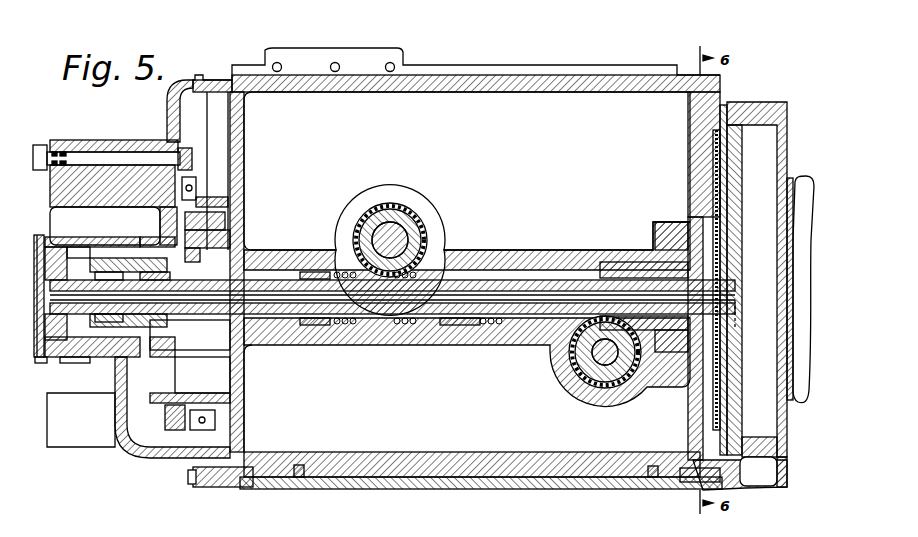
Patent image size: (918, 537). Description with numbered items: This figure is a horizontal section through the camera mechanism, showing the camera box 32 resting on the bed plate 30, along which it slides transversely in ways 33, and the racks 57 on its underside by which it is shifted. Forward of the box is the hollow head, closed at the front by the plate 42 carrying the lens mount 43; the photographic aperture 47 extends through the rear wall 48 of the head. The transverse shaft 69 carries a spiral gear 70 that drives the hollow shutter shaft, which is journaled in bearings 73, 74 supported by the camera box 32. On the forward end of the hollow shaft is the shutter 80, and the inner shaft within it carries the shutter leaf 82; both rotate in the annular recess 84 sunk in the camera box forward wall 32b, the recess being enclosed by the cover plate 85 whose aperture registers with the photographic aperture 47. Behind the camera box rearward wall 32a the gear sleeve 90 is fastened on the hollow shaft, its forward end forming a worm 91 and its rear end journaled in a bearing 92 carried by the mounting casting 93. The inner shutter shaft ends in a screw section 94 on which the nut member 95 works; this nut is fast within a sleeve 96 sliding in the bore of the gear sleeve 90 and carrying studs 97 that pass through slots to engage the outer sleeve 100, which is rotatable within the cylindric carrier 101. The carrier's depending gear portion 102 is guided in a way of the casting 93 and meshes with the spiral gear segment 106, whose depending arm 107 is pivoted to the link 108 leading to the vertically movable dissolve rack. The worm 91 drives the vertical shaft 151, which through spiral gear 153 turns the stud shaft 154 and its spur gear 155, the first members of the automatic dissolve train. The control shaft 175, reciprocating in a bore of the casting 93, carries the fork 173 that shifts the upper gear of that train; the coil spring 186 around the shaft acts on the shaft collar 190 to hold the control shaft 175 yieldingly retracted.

The bed plate 30 is at (434, 491).
The camera box 32 is at (542, 76).
The camera box rearward wall 32a is at (243, 144).
The camera box forward wall 32b is at (690, 156).
The ways 33 is at (250, 488).
The plate 42 is at (792, 130).
The lens mount 43 is at (803, 185).
The photographic aperture 47 is at (738, 318).
The rear wall 48 is at (735, 177).
The racks 57 is at (298, 465).
The transverse shaft 69 is at (593, 360).
The spiral gear 70 is at (567, 388).
The bearing 73 is at (250, 263).
The bearing 74 is at (290, 263).
The shutter 80 is at (703, 167).
The shutter leaf 82 is at (713, 198).
The annular recess 84 is at (713, 147).
The cover plate 85 is at (730, 106).
The gear sleeve 90 is at (178, 268).
The worm 91 is at (195, 318).
The bearing 92 is at (44, 240).
The mounting casting 93 is at (83, 190).
The screw section 94 is at (78, 275).
The nut member 95 is at (40, 357).
The sleeve 96 is at (70, 357).
The studs 97 is at (117, 280).
The sleeve 100 is at (165, 272).
The cylindric carrier 101 is at (78, 279).
The gear portion 102 is at (100, 345).
The spiral gear segment 106 is at (115, 382).
The depending arm 107 is at (163, 408).
The link 108 is at (175, 453).
The vertical shaft 151 is at (242, 346).
The spiral gear 153 is at (225, 212).
The stud shaft 154 is at (213, 243).
The spur gear 155 is at (207, 200).
The fork 173 is at (185, 148).
The control shaft 175 is at (124, 150).
The coil spring 186 is at (65, 150).
The shaft collar 190 is at (45, 152).